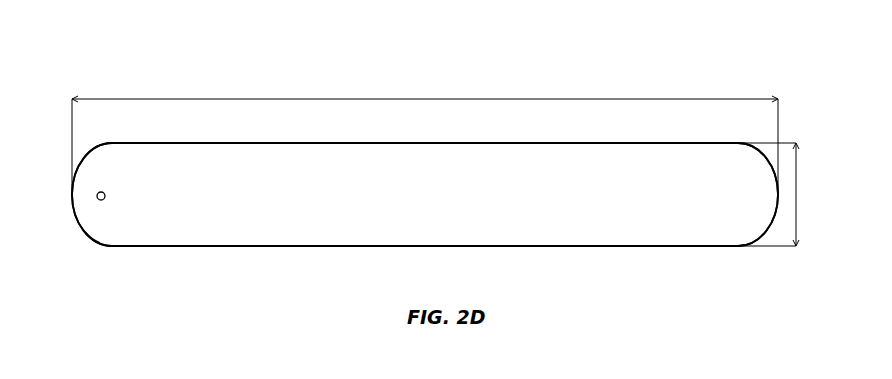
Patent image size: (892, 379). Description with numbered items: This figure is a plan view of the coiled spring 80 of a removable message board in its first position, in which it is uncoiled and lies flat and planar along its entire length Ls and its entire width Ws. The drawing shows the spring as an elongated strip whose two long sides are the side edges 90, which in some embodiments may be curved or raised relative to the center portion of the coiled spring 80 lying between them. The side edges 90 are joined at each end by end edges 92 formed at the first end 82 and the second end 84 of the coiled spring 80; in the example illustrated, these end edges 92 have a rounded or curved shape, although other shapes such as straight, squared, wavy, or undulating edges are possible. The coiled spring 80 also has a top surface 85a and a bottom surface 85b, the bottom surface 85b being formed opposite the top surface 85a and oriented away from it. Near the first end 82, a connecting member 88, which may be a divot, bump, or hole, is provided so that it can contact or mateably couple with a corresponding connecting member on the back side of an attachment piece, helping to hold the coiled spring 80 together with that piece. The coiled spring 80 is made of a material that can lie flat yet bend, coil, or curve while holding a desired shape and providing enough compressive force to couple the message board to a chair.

The coiled spring 80 is at (446, 204).
The first end 82 is at (142, 241).
The second end 84 is at (743, 212).
The top surface 85a is at (243, 231).
The bottom surface 85b is at (268, 247).
The connecting member 88 is at (105, 197).
The side edges 90 is at (530, 143).
The end edges 92 is at (102, 243).
The length Ls is at (438, 99).
The width Ws is at (797, 196).